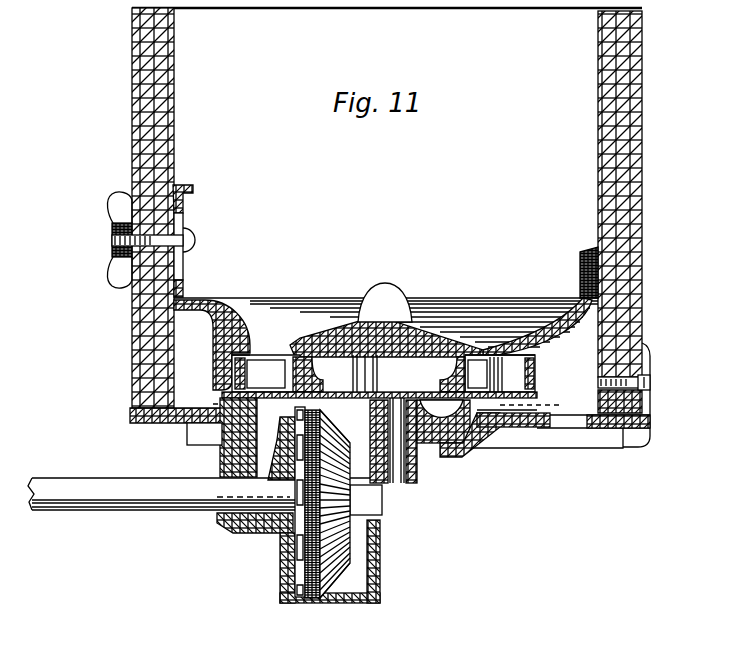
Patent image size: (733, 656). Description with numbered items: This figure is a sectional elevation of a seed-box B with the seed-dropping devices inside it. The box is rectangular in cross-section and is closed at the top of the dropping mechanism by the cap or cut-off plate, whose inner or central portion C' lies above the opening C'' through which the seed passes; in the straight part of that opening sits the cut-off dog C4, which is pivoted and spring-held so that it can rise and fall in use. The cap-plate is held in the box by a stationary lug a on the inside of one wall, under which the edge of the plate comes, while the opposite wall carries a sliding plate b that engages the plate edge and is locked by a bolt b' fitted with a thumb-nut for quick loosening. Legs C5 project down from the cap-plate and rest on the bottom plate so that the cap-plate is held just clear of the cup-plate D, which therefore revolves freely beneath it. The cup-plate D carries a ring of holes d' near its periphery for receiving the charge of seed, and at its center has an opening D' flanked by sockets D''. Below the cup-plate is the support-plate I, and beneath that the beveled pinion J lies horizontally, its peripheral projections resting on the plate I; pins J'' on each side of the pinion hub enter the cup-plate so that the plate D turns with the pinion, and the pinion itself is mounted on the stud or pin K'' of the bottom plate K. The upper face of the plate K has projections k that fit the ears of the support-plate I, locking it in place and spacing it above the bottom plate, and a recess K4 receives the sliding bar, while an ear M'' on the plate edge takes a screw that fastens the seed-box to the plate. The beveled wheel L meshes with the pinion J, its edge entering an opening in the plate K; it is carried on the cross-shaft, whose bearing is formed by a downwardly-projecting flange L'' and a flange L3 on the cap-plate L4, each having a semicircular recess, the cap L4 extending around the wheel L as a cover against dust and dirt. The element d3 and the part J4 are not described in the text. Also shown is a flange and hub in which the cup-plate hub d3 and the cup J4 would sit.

The seed-box B is at (390, 228).
The stationary lug a is at (580, 283).
The sliding plate b is at (189, 241).
The bolt b' is at (132, 240).
The inner or central portion of the cap-plate C' is at (386, 308).
The opening in the cap-plate C'' is at (436, 313).
The cut-off dog C4 is at (355, 320).
The legs C5 is at (213, 368).
The central hub cap d3 is at (385, 302).
The holes d' is at (383, 373).
The pins J'' is at (316, 374).
The right bearing cup J4 is at (446, 374).
The socket D'' is at (374, 373).
The central opening D' is at (394, 373).
The cup-plate D is at (367, 369).
The support-plate I is at (213, 392).
The projections k is at (389, 405).
The ear M'' is at (638, 379).
The downwardly-projecting flange L'' is at (237, 439).
The cap-plate L4 is at (292, 596).
The flange L3 is at (275, 530).
The beveled wheel L is at (300, 502).
The stud or pin K'' is at (398, 457).
The beveled pinion J is at (443, 452).
The recess K4 is at (478, 442).
The bottom plate K is at (513, 443).